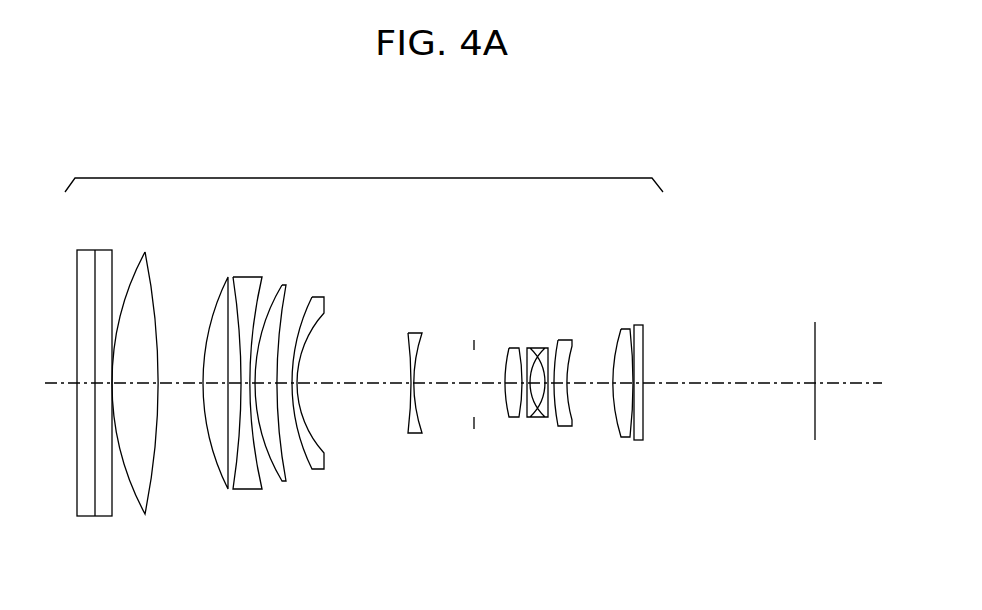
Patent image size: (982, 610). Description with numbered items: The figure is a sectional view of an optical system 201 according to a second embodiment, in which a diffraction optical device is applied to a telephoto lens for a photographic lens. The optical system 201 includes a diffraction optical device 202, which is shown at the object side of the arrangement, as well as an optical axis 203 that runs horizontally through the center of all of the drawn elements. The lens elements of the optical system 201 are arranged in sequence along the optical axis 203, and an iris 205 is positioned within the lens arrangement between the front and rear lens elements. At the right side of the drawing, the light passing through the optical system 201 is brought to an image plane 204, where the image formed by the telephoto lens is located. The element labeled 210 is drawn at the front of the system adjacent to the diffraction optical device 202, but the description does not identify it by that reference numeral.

The optical system 201 is at (402, 177).
The diffraction optical device 202 is at (104, 391).
The optical axis 203 is at (736, 385).
The image plane 204 is at (813, 370).
The iris 205 is at (475, 345).
The cover glass / filter plate 210 is at (85, 248).